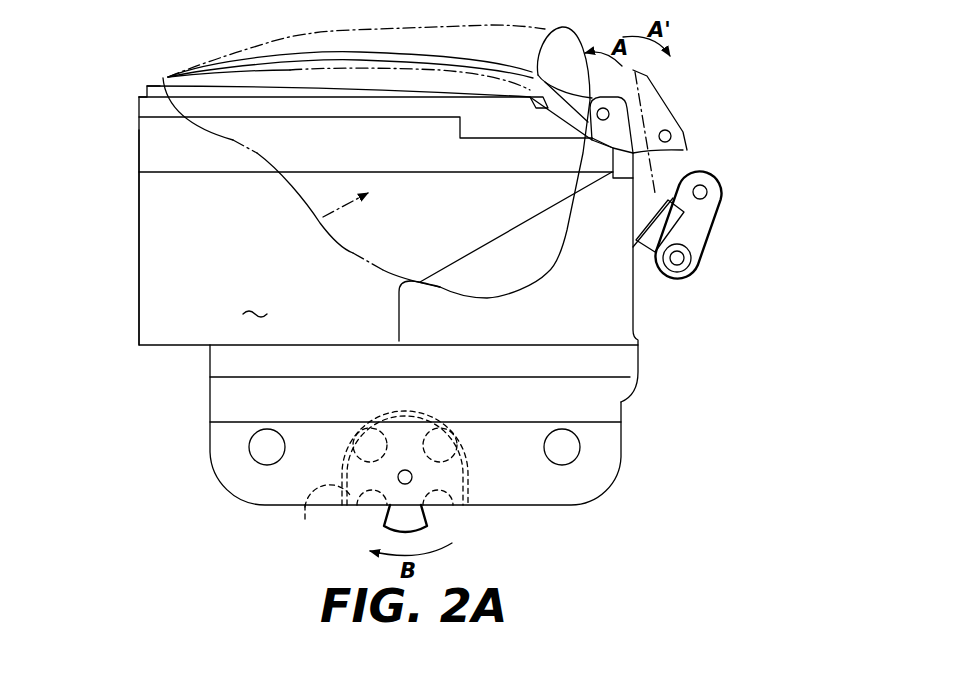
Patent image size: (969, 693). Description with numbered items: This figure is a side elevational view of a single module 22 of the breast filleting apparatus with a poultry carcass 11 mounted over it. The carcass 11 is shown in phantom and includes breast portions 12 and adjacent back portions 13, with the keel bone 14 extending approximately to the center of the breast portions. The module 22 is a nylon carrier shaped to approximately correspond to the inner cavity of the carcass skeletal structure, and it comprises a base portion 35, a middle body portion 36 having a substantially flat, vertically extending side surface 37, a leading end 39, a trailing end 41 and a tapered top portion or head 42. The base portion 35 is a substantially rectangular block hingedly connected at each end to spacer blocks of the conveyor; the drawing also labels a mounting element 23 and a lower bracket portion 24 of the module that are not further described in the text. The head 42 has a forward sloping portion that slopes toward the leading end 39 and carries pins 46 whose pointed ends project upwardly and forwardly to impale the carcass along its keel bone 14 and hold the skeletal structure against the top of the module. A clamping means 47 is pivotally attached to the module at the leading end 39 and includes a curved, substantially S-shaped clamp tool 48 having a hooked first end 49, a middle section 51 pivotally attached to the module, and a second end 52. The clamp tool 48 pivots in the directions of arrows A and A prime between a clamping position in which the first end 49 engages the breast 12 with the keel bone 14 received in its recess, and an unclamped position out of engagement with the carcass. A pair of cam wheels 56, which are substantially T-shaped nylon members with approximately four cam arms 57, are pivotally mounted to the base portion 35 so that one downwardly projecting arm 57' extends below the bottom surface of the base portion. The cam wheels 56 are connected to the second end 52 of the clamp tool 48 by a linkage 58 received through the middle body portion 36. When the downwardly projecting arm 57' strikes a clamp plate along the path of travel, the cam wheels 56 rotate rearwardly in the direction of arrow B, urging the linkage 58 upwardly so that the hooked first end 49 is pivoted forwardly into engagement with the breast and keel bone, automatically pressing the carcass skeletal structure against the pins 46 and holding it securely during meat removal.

The poultry carcass 11 is at (317, 222).
The breast portion 12 is at (328, 33).
The back portion 13 is at (293, 200).
The keel bone 14 is at (235, 62).
The module 22 is at (91, 352).
The mounting hole 23 is at (565, 450).
The mounting bracket 24 is at (607, 402).
The base portion 35 is at (232, 453).
The middle body portion 36 is at (173, 277).
The side surface 37 is at (426, 244).
The leading end 39 is at (634, 316).
The trailing end 41 is at (138, 212).
The tapered top portion 42 is at (148, 112).
The pins 46 is at (502, 94).
The clamping means 47 is at (632, 126).
The clamp tool 48 is at (611, 145).
The hooked first end 49 is at (559, 43).
The middle section 51 is at (718, 158).
The second end 52 is at (718, 183).
The cam wheels 56 is at (396, 514).
The cam arms 57 is at (320, 513).
The downwardly projecting arm 57' is at (428, 480).
The linkage 58 is at (667, 282).